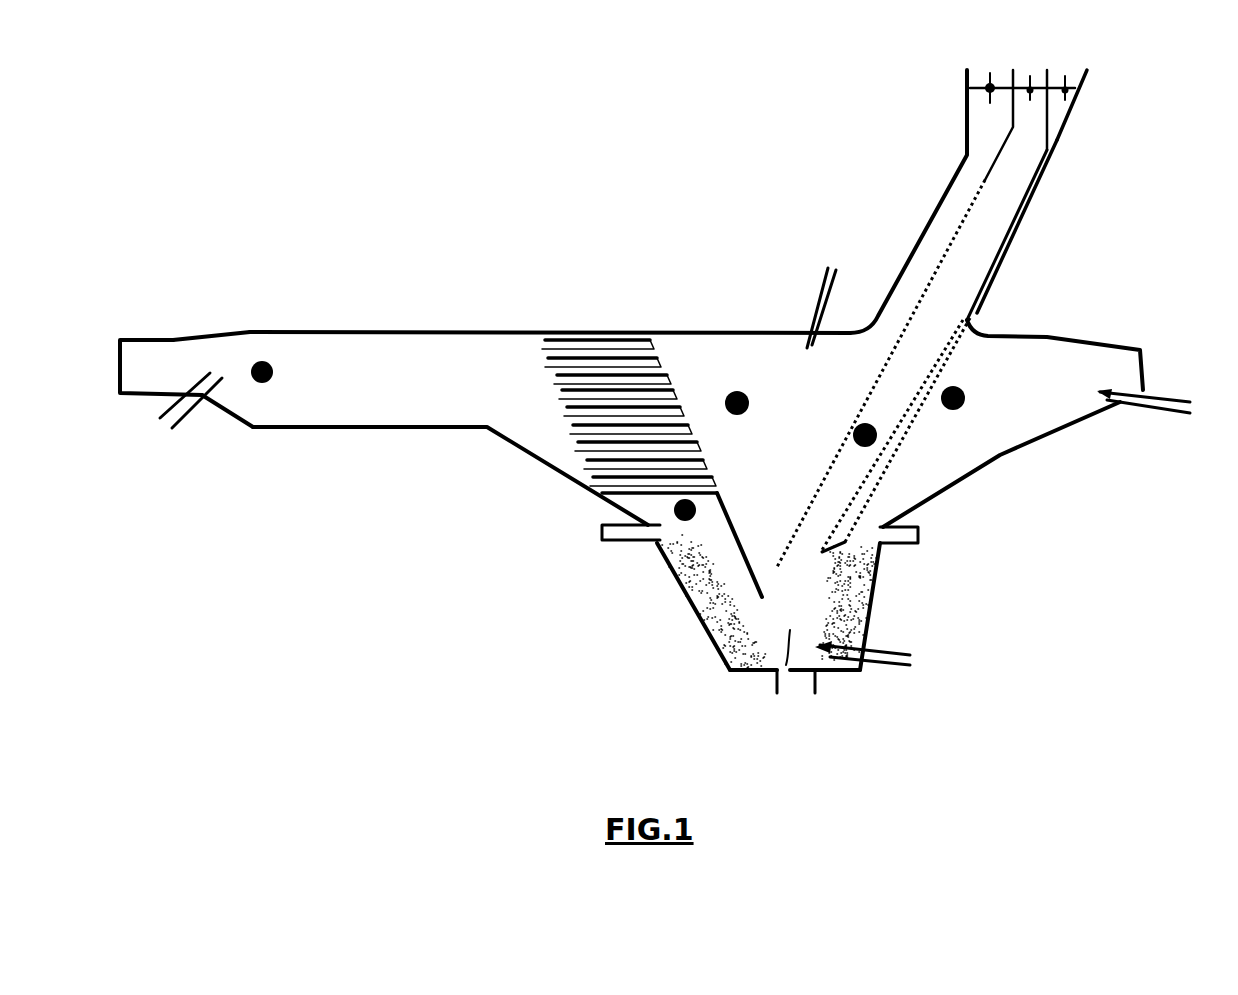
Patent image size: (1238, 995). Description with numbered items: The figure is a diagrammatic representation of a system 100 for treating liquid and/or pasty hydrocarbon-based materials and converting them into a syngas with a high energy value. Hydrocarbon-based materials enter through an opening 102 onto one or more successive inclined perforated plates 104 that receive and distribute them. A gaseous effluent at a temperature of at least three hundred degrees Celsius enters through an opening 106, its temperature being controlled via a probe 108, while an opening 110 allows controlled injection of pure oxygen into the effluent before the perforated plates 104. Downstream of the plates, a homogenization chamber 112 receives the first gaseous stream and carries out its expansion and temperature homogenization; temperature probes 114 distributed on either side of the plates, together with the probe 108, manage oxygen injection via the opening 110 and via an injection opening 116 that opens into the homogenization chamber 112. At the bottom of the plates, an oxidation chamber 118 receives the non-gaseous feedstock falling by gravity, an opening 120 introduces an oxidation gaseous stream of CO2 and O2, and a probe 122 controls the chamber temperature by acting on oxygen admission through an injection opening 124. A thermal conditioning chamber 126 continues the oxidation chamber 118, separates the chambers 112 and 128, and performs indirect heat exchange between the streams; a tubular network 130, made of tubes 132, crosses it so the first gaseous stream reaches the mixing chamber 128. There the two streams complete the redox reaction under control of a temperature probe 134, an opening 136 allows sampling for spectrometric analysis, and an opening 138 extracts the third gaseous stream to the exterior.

The system 100 is at (312, 137).
The opening 102 is at (962, 170).
The inclined perforated plates 104 is at (938, 375).
The opening 106 is at (1118, 357).
The probe 108 is at (965, 395).
The opening 110 is at (1178, 413).
The homogenization chamber 112 is at (798, 375).
The temperature probes 114 is at (852, 433).
The injection opening 116 is at (832, 293).
The oxidation chamber 118 is at (796, 662).
The opening 120 is at (773, 685).
The probe 122 is at (686, 518).
The injection opening 124 is at (880, 645).
The thermal conditioning chamber 126 is at (665, 401).
The mixing chamber 128 is at (475, 380).
The tubular network 130 is at (580, 347).
The tubes 132 is at (612, 350).
The temperature probe 134 is at (276, 374).
The opening 136 is at (205, 388).
The opening 138 is at (174, 350).